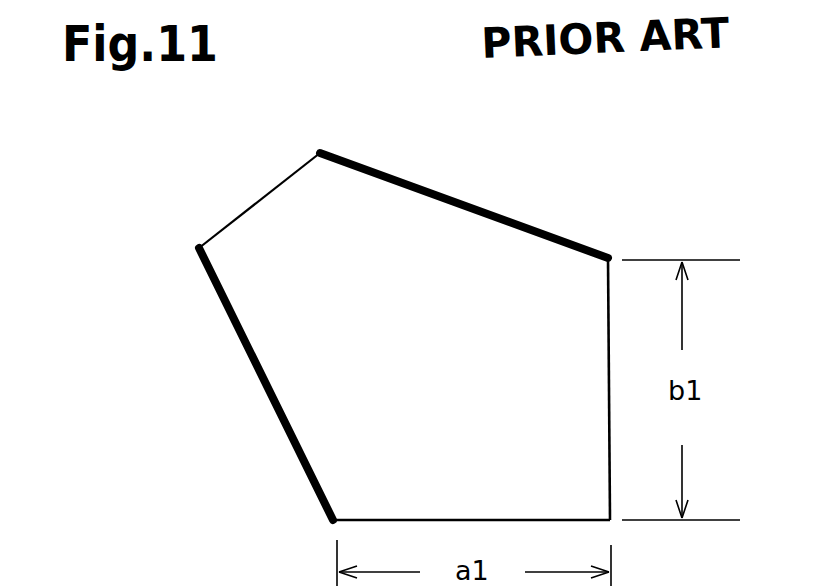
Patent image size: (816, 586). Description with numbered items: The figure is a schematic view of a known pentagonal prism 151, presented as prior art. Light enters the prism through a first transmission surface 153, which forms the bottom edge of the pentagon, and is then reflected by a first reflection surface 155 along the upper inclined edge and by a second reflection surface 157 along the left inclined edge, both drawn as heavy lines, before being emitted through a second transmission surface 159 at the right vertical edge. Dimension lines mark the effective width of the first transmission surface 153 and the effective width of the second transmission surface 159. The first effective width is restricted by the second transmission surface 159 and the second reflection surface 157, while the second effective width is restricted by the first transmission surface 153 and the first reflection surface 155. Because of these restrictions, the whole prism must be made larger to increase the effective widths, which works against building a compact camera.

The pentagonal prism 151 is at (395, 133).
The first transmission surface 153 is at (397, 521).
The first reflection surface 155 is at (470, 204).
The second reflection surface 157 is at (274, 403).
The second transmission surface 159 is at (612, 466).